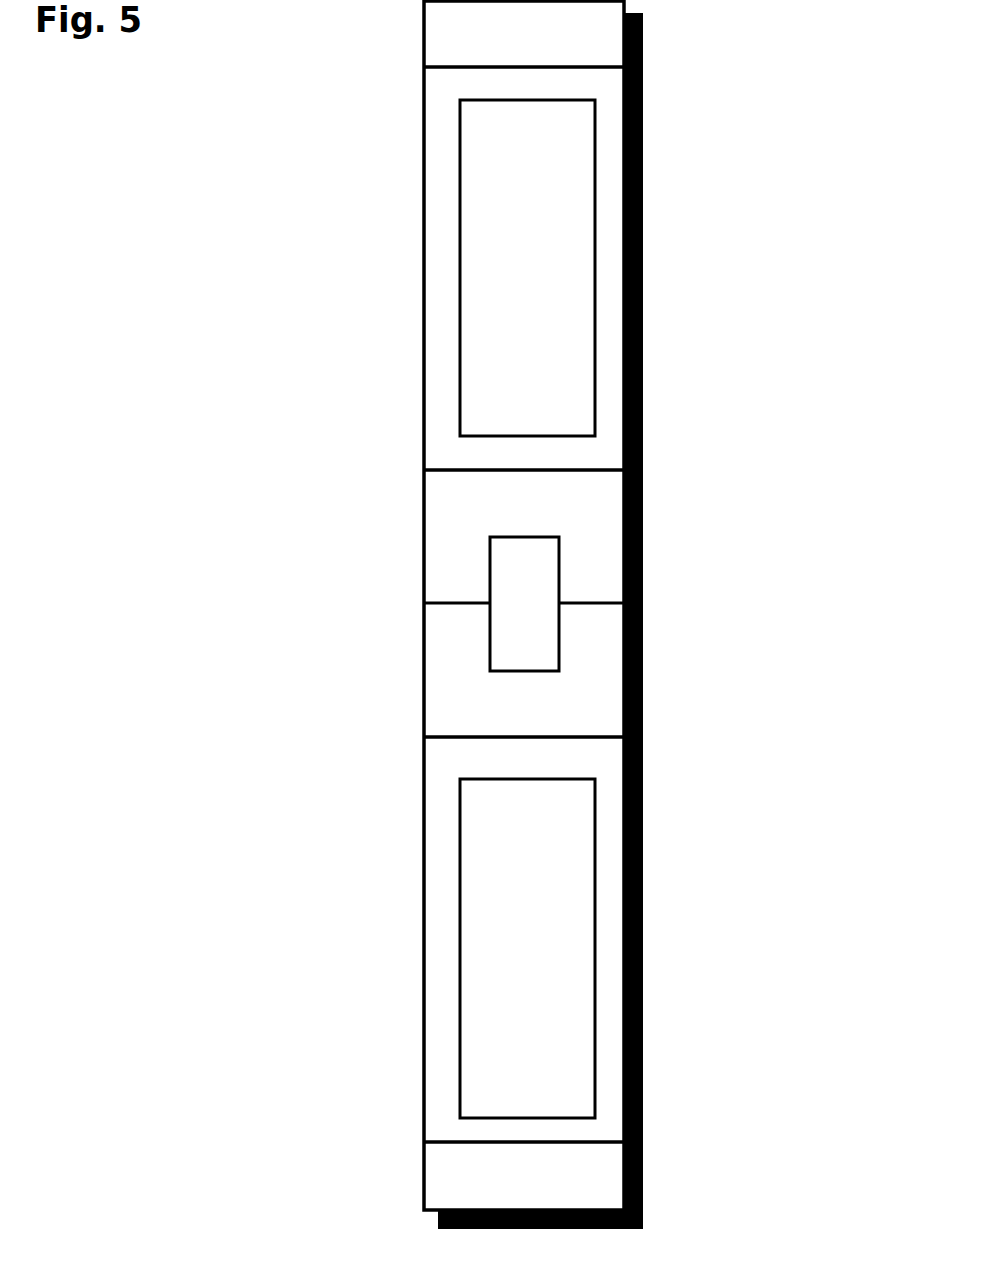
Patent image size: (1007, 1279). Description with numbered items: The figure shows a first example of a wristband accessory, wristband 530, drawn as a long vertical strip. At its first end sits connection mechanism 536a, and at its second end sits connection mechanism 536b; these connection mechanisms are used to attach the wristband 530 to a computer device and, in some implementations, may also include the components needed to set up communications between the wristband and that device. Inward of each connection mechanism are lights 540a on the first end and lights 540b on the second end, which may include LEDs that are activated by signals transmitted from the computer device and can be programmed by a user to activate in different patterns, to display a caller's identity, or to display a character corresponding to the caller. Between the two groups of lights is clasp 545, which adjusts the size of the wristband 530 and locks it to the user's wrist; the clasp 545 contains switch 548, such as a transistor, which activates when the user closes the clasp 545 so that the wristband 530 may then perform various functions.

The wristband 530 is at (778, 74).
The connection mechanism 536a is at (524, 37).
The connection mechanism 536b is at (524, 1171).
The lights 540a is at (527, 268).
The lights 540b is at (527, 948).
The clasp 545 is at (412, 679).
The switch 548 is at (567, 636).